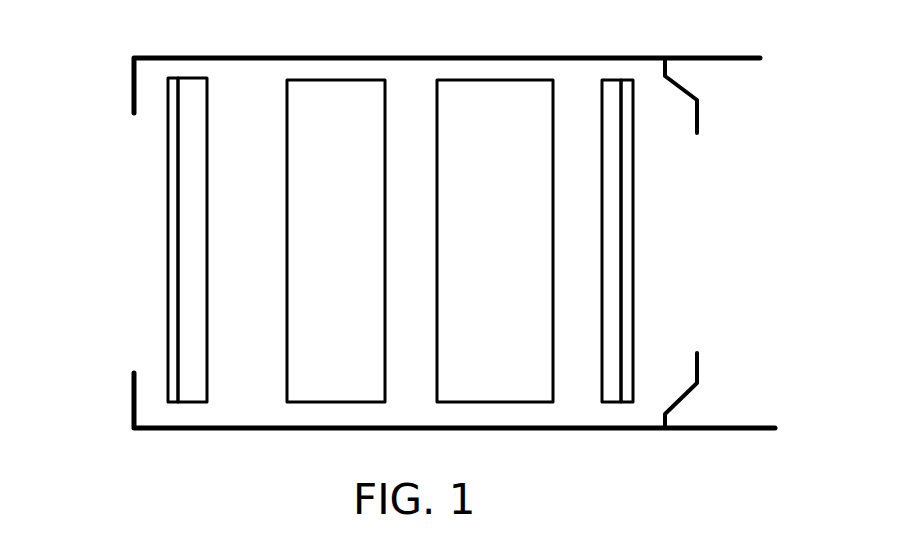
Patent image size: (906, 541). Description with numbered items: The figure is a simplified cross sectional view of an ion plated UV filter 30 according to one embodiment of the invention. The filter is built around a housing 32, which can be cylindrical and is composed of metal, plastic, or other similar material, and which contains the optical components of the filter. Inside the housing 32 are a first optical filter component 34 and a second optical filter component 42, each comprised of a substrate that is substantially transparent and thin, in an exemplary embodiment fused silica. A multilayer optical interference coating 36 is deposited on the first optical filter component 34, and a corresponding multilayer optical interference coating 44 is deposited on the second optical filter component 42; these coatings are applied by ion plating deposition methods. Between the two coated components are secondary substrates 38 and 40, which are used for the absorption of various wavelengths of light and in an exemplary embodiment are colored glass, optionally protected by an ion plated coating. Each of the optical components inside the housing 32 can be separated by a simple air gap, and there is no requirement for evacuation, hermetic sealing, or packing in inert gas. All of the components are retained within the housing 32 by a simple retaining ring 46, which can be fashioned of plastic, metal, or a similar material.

The UV filter 30 is at (59, 89).
The housing 32 is at (223, 55).
The first optical filter component 34 is at (208, 215).
The multilayer optical interference coating 36 is at (167, 212).
The secondary substrate 38 is at (340, 80).
The secondary substrate 40 is at (483, 80).
The second optical filter component 42 is at (610, 80).
The multilayer optical interference coating 44 is at (634, 210).
The retaining ring 46 is at (697, 118).